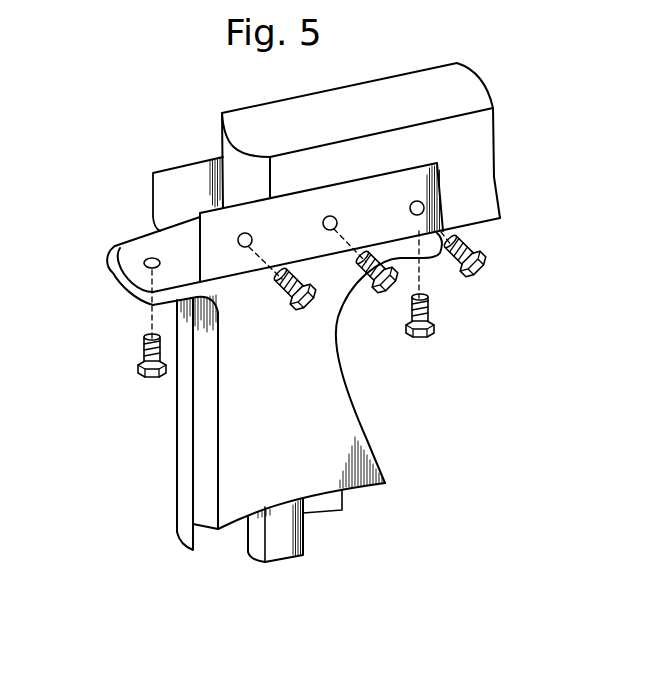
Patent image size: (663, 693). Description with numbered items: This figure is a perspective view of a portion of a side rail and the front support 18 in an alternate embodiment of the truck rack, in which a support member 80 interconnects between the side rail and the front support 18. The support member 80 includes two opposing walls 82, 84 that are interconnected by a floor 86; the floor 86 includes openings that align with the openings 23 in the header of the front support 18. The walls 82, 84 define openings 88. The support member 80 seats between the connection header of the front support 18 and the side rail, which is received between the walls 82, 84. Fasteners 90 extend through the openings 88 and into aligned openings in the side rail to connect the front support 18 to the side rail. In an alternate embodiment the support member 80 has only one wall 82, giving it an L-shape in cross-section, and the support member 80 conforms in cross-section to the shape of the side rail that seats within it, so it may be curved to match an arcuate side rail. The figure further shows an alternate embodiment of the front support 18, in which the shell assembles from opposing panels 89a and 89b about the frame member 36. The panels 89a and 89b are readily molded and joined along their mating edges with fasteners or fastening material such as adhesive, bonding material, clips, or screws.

The support member 80 is at (140, 157).
The wall 84 is at (210, 173).
The floor 86 is at (185, 245).
The openings 23 is at (147, 262).
The wall 82 is at (326, 227).
The openings 88 is at (328, 217).
The fasteners 90 is at (476, 278).
The panel 89a is at (190, 420).
The panel 89b is at (337, 413).
The front support 18 is at (375, 445).
The frame member 36 is at (290, 543).